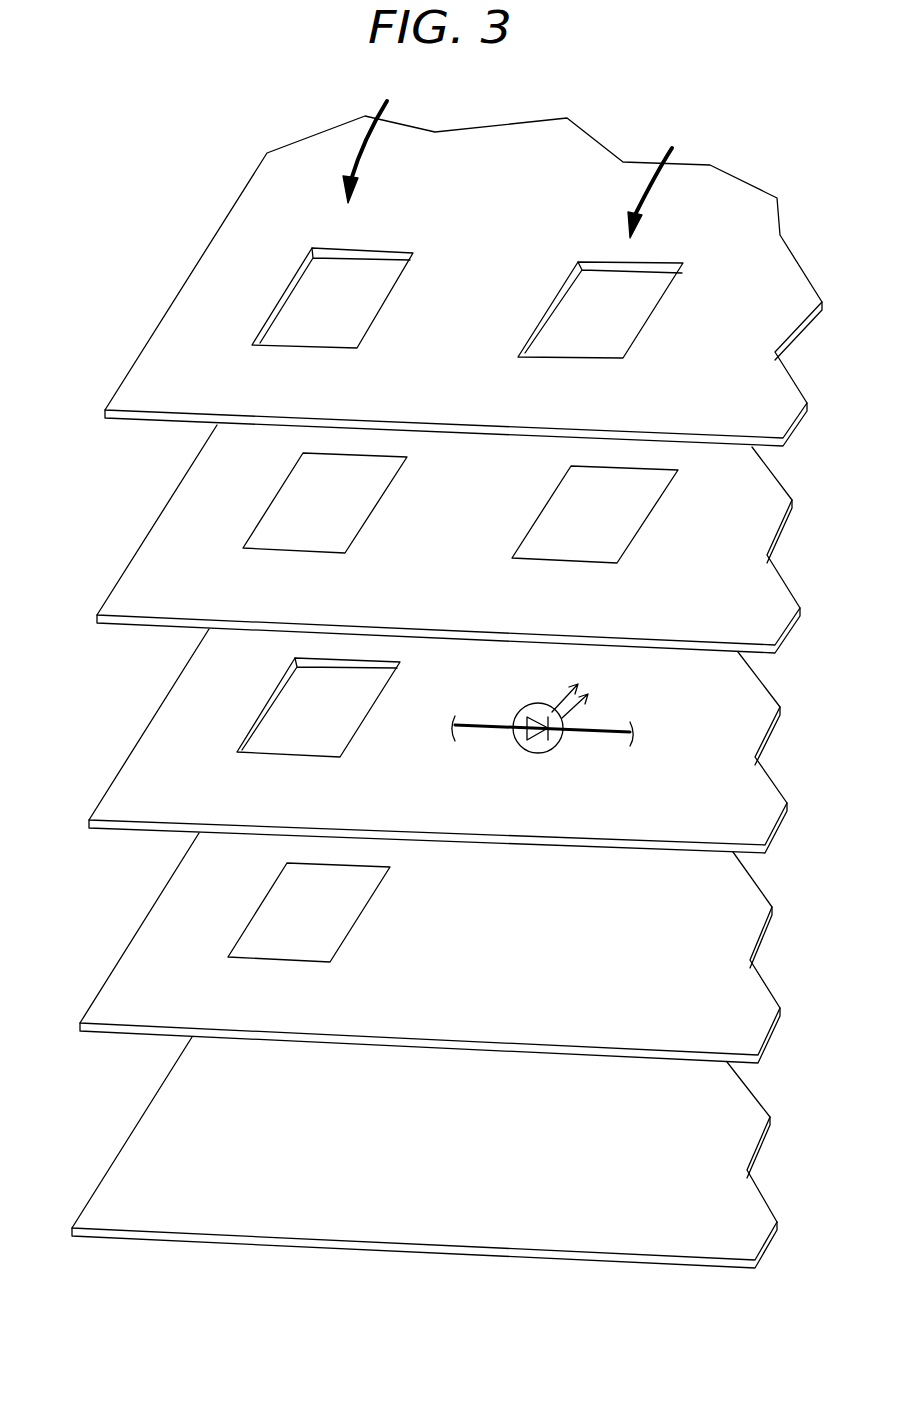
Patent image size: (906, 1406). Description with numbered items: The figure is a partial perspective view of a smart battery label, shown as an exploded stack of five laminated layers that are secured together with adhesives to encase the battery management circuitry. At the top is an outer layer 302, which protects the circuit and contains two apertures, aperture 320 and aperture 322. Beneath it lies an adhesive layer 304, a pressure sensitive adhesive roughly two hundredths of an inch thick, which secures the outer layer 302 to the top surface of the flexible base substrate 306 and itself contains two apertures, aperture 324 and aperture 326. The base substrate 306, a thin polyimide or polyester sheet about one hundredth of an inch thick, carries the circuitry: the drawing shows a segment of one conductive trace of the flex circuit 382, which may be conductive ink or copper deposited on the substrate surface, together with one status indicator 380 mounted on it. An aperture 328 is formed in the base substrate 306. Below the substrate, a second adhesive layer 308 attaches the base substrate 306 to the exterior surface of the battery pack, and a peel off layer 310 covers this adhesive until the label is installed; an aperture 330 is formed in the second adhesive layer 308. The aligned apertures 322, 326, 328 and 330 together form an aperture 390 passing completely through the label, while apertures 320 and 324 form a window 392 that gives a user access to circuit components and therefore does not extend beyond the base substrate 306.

The outer layer 302 is at (182, 342).
The adhesive layer 304 is at (172, 540).
The base substrate 306 is at (168, 742).
The second adhesive layer 308 is at (165, 935).
The peel off layer 310 is at (163, 1137).
The aperture 320 is at (618, 307).
The aperture 322 is at (353, 276).
The aperture 324 is at (623, 515).
The aperture 326 is at (358, 507).
The aperture 328 is at (307, 712).
The aperture 330 is at (325, 918).
The status indicator 380 is at (522, 708).
The flex circuit 382 is at (583, 735).
The aperture 390 is at (382, 137).
The window 392 is at (669, 179).